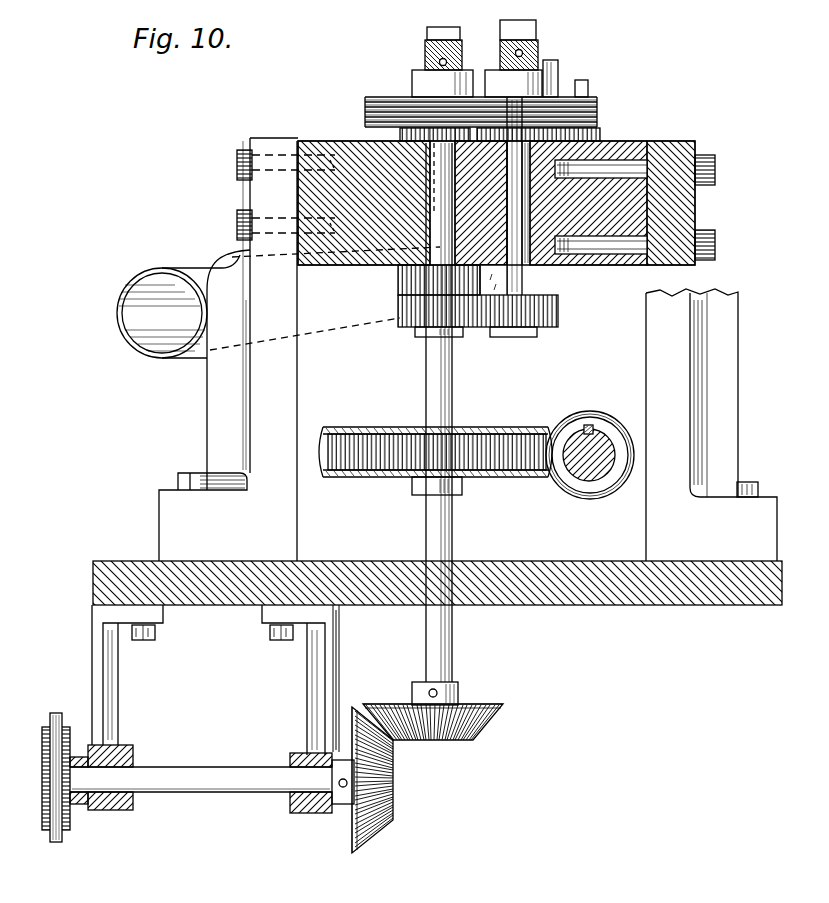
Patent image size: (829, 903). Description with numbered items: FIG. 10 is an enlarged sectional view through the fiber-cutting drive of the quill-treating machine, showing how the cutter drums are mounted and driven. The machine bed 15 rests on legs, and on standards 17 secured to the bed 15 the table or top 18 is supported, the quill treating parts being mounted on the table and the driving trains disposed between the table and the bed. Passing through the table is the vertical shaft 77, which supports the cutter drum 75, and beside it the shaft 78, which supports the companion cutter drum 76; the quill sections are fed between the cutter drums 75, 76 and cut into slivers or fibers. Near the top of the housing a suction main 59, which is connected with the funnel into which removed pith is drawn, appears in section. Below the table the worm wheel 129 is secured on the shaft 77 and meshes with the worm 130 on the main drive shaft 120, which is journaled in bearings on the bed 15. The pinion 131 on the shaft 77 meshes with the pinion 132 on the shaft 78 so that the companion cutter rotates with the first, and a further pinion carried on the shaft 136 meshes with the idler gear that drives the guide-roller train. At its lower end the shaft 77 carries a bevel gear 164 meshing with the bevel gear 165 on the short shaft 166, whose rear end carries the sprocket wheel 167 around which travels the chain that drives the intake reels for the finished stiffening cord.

The machine bed 15 is at (722, 607).
The standards 17 is at (285, 395).
The table 18 is at (640, 143).
The suction main 59 is at (147, 347).
The cutter drum 75 is at (372, 101).
The cutter drum 76 is at (567, 97).
The shaft 77 is at (437, 247).
The shaft 78 is at (530, 281).
The main shaft 120 is at (592, 474).
The worm wheel 129 is at (513, 430).
The worm 130 is at (575, 420).
The pinion 131 is at (401, 325).
The pinion 132 is at (560, 313).
The shaft 136 is at (410, 286).
The bevel gear 164 is at (488, 735).
The bevel gear 165 is at (392, 790).
The short shaft 166 is at (182, 775).
The sprocket wheel 167 is at (56, 775).